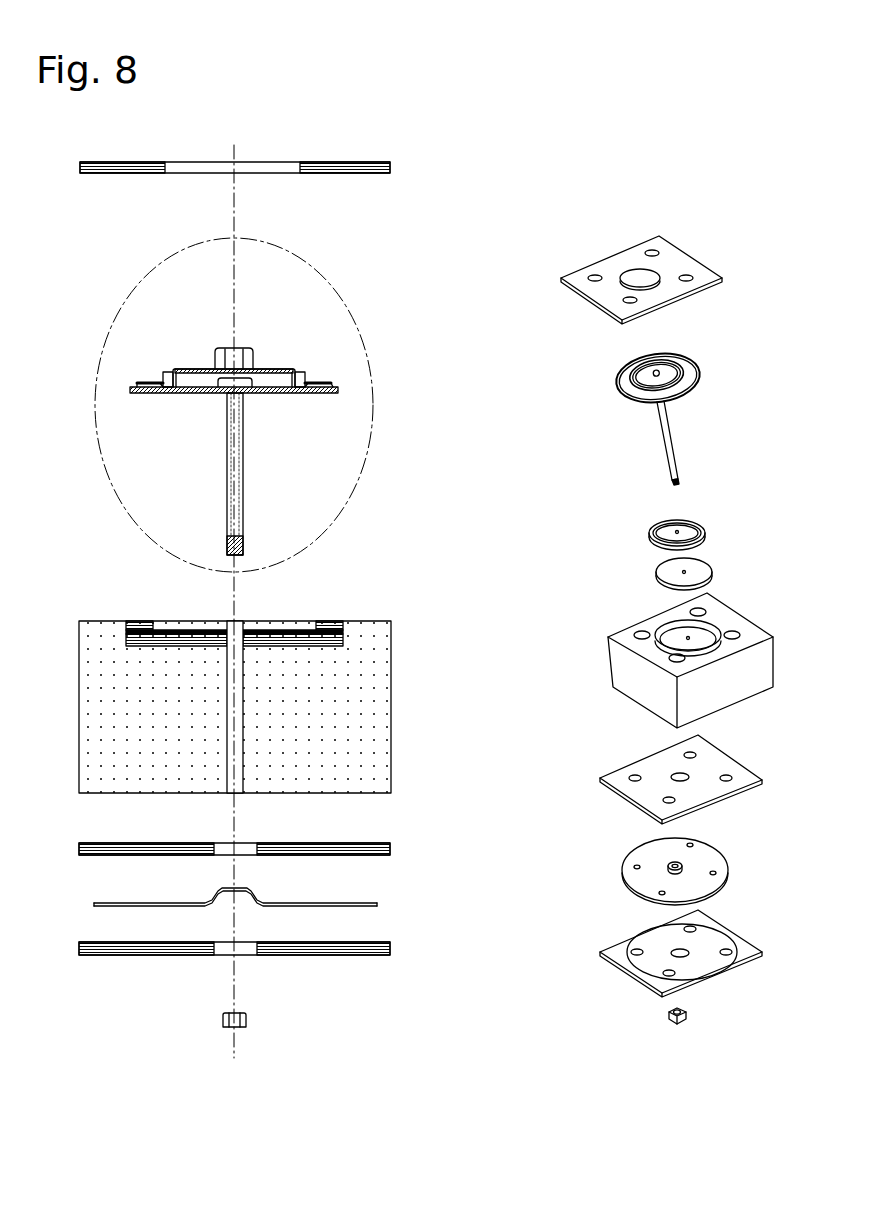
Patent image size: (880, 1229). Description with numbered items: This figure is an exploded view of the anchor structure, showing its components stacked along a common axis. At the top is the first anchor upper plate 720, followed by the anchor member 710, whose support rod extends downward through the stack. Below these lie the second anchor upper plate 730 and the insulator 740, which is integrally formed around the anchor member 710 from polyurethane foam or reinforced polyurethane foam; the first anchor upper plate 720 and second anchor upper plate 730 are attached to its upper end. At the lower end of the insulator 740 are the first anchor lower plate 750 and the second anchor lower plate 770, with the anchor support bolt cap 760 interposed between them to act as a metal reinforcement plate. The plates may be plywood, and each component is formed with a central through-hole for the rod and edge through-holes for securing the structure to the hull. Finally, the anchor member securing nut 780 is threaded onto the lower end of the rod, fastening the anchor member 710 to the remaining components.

The anchor member 710 is at (362, 286).
The first anchor upper plate 720 is at (392, 144).
The second anchor upper plate 730 is at (326, 621).
The insulator 740 is at (385, 707).
The first anchor lower plate 750 is at (390, 848).
The anchor support bolt cap 760 is at (378, 904).
The second anchor lower plate 770 is at (390, 948).
The anchor member securing nut 780 is at (248, 1020).